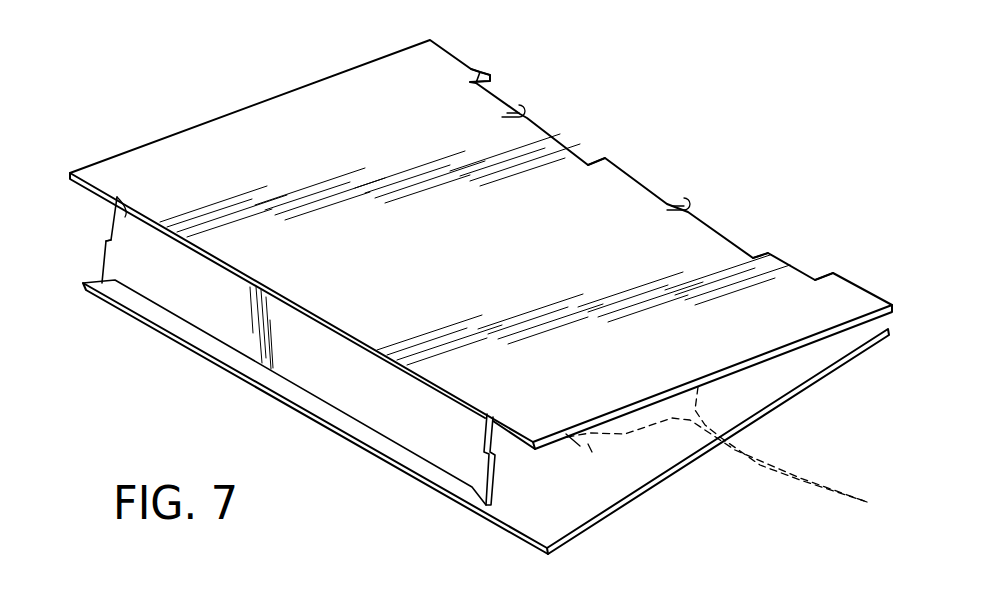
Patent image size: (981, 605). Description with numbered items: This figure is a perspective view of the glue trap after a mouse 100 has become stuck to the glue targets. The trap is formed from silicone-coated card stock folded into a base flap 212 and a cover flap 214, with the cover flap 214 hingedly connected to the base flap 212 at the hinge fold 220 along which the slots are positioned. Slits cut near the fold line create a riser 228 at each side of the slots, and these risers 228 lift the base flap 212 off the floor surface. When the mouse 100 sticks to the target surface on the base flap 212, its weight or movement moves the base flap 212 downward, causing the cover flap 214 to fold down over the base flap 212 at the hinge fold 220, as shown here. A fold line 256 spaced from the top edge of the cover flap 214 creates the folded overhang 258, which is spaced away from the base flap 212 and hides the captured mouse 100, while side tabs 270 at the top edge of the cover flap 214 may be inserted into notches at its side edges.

The mouse 100 is at (807, 473).
The base flap 212 is at (632, 503).
The cover flap 214 is at (210, 120).
The hinge fold 220 is at (690, 207).
The riser 228 is at (462, 63).
The fold line 256 is at (125, 209).
The folded overhang 258 is at (185, 302).
The side tab 270 is at (107, 258).